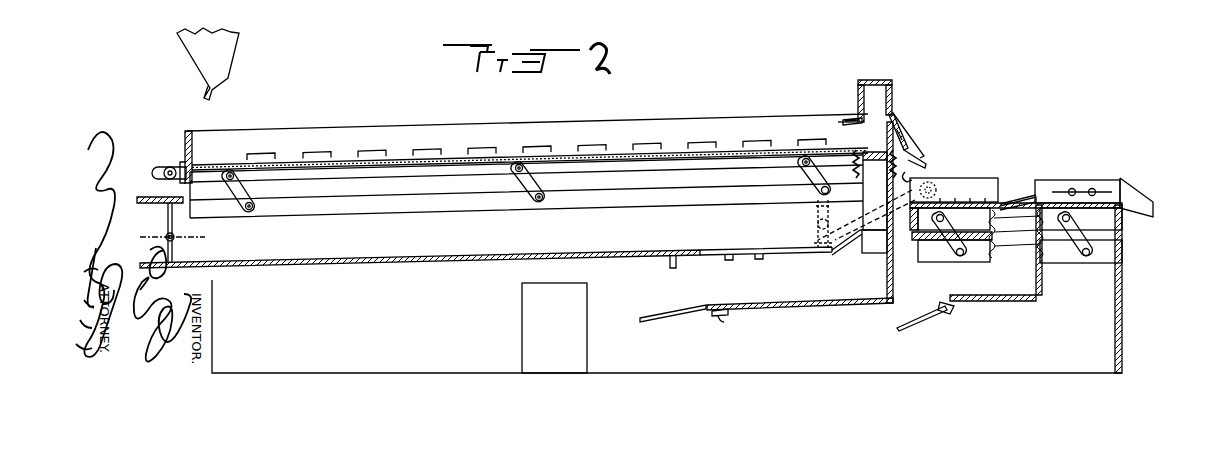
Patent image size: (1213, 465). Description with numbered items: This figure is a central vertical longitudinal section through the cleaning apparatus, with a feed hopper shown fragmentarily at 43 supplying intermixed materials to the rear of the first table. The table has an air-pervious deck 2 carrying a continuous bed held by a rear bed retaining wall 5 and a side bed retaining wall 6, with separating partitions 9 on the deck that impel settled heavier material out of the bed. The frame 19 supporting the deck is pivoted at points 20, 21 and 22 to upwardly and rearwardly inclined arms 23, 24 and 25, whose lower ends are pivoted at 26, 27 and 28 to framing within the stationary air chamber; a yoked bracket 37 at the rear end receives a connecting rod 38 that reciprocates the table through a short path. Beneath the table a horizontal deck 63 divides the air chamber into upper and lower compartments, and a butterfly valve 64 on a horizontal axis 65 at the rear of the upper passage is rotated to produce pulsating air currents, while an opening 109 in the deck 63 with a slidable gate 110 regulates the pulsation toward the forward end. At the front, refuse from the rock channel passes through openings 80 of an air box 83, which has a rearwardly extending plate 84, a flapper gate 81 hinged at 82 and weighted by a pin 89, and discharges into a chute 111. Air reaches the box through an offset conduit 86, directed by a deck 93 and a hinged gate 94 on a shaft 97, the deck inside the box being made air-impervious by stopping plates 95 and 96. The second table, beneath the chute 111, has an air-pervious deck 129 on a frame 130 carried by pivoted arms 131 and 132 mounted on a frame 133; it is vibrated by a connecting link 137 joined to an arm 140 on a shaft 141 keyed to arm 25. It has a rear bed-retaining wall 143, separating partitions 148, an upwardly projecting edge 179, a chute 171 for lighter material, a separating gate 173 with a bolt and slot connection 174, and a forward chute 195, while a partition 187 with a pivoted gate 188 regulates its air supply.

The air-pervious bottom or deck 2 is at (345, 158).
The bed retaining wall 5 is at (190, 133).
The bed retaining wall 6 is at (386, 147).
The separating partitions 9 is at (430, 152).
The frame 19 is at (380, 176).
The pivot point 20 is at (224, 188).
The pivot point 21 is at (516, 181).
The pivot point 22 is at (800, 164).
The arm 23 is at (240, 189).
The arm 24 is at (535, 184).
The arm 25 is at (800, 176).
The pivot 26 is at (251, 212).
The pivot 27 is at (548, 200).
The pivot 28 is at (812, 200).
The yoked bracket 37 is at (184, 162).
The connecting rod 38 is at (160, 167).
The feed means 43 is at (231, 54).
The horizontally-disposed deck 63 is at (383, 268).
The butterfly valve or vane 64 is at (173, 250).
The horizontal axis 65 is at (167, 234).
The openings 80 is at (846, 124).
The regulating flapper gate 81 is at (912, 152).
The hinge 82 is at (895, 125).
The air box 83 is at (893, 83).
The rearwardly extending plate 84 is at (850, 117).
The offset conduit 86 is at (880, 256).
The pin 89 is at (902, 138).
The horizontally-disposed deck 93 is at (812, 306).
The hinged gate 94 is at (672, 305).
The air stopping plate 95 is at (858, 252).
The air stopping plate 96 is at (875, 191).
The shaft 97 is at (722, 316).
The opening 109 is at (788, 250).
The slidable gate 110 is at (700, 260).
The chute 111 is at (918, 158).
The air-pervious deck 129 is at (985, 203).
The frame 130 is at (1122, 222).
The pivoted arm 131 is at (950, 242).
The pivoted arm 132 is at (1092, 250).
The frame 133 is at (1062, 262).
The connecting link 137 is at (852, 215).
The arm 140 is at (820, 258).
The shaft 141 is at (866, 165).
The rear bed-retaining wall 143 is at (916, 168).
The separating partitions 148 is at (968, 178).
The chute 171 is at (1018, 200).
The separating gate 173 is at (1068, 186).
The bolt and slot connection 174 is at (1092, 188).
The upwardly projecting edge 179 is at (1030, 198).
The horizontally disposed partition 187 is at (988, 301).
The pivotally-mounted gate 188 is at (920, 318).
The chute 195 is at (1138, 203).